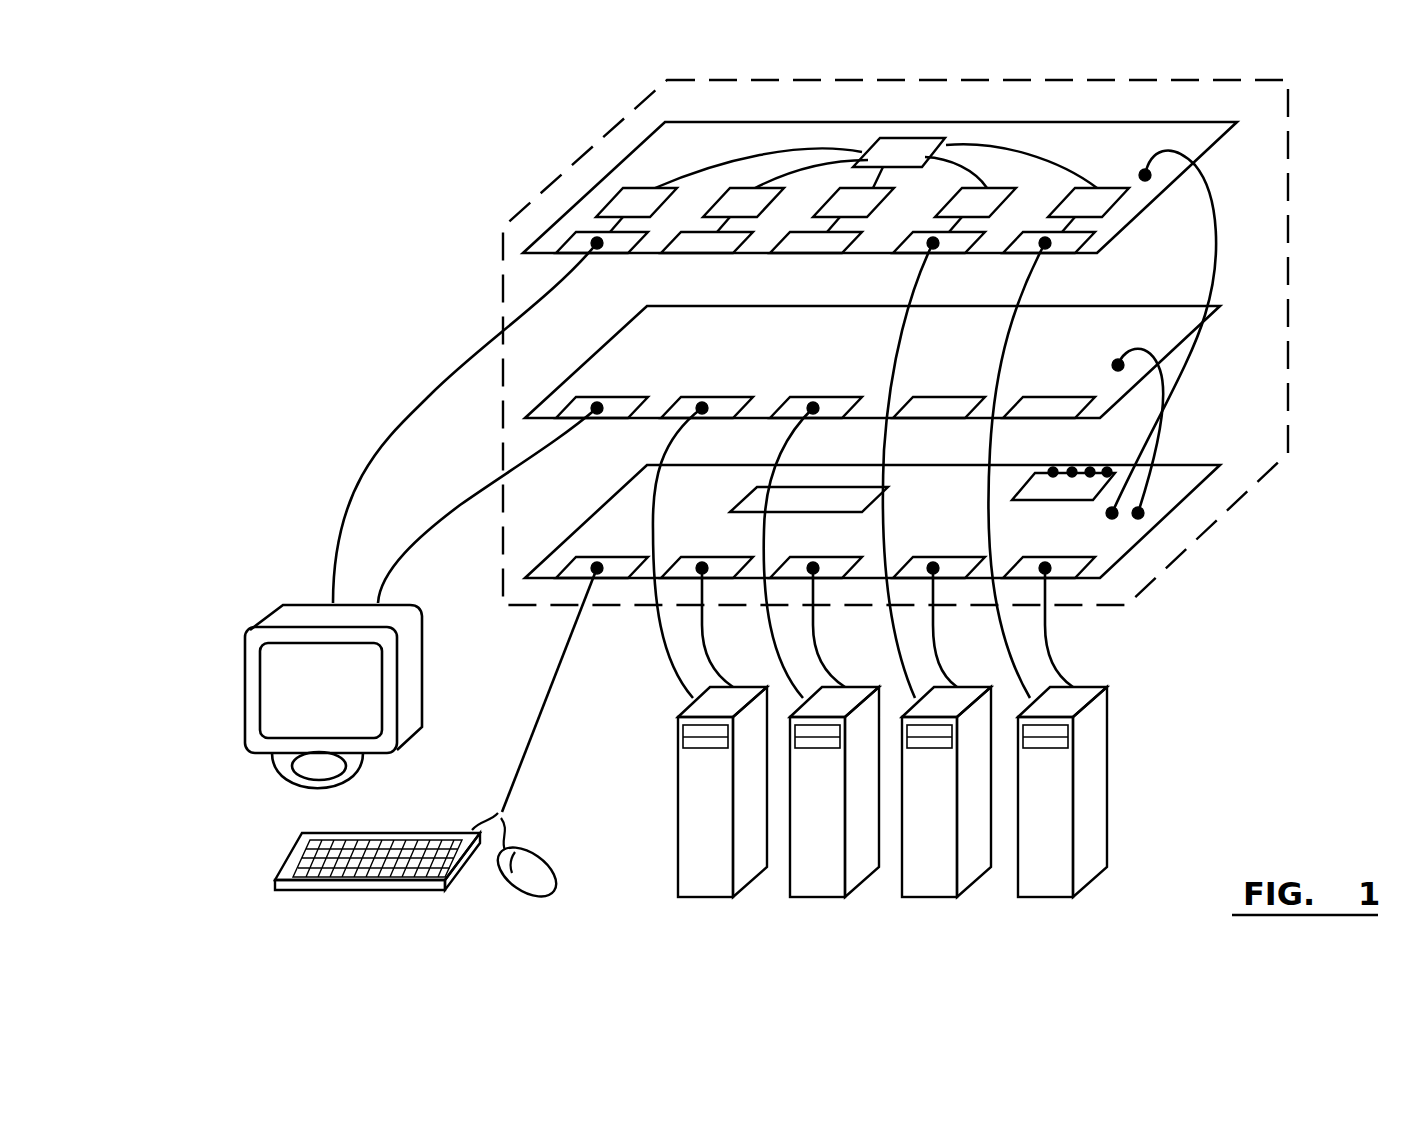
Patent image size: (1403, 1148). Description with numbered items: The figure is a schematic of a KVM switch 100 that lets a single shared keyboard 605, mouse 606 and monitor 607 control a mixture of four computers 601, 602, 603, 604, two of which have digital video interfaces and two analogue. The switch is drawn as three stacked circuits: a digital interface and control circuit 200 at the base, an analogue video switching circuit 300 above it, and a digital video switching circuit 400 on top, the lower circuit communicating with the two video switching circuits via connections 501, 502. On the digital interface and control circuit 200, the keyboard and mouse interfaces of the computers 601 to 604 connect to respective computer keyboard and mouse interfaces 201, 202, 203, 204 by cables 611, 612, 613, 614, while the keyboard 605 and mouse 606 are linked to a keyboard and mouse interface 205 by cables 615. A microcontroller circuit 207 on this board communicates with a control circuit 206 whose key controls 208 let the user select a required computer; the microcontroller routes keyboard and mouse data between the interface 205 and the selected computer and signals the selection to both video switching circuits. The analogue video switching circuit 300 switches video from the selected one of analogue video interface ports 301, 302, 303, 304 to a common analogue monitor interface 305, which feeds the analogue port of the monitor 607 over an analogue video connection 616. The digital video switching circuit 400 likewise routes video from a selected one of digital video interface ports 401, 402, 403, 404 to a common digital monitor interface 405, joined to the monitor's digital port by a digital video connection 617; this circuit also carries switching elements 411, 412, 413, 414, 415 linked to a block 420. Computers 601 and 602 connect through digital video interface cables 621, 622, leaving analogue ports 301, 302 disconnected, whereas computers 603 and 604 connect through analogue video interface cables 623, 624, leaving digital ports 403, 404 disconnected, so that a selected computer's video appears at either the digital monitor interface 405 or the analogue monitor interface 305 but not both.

The KVM switch 100 is at (1290, 343).
The digital interface and control circuit 200 is at (1200, 490).
The computer keyboard and mouse interface 201 is at (1066, 557).
The computer keyboard and mouse interface 202 is at (954, 557).
The computer keyboard and mouse interface 203 is at (832, 557).
The computer keyboard and mouse interface 204 is at (721, 557).
The keyboard and mouse interface 205 is at (617, 557).
The control circuit 206 is at (1063, 486).
The microcontroller circuit 207 is at (809, 499).
The key controls 208 is at (1106, 467).
The analogue video switching circuit 300 is at (1220, 312).
The analogue video interface port 301 is at (1066, 397).
The analogue video interface port 302 is at (954, 397).
The analogue video interface port 303 is at (832, 397).
The analogue video interface port 304 is at (721, 397).
The analogue monitor interface 305 is at (613, 397).
The digital video switching circuit 400 is at (1218, 143).
The digital video interface port 401 is at (1086, 243).
The digital video interface port 402 is at (976, 243).
The digital video interface port 403 is at (856, 243).
The digital video interface port 404 is at (746, 243).
The digital monitor interface 405 is at (638, 243).
The module 411 is at (1088, 210).
The module 412 is at (975, 210).
The module 413 is at (853, 210).
The module 414 is at (743, 210).
The module 415 is at (636, 210).
The controller 420 is at (876, 163).
The connection 501 is at (1220, 227).
The connection 502 is at (1160, 412).
The computer 601 is at (1093, 882).
The computer 602 is at (974, 880).
The computer 603 is at (862, 880).
The computer 604 is at (750, 880).
The keyboard 605 is at (288, 853).
The mouse 606 is at (535, 856).
The monitor 607 is at (275, 697).
The cable 611 is at (1057, 648).
The cable 612 is at (1015, 664).
The cable 613 is at (905, 665).
The cable 614 is at (782, 665).
The cables 615 is at (548, 698).
The analogue video connection 616 is at (437, 520).
The digital video connection 617 is at (400, 420).
The digital video interface cable 621 is at (940, 628).
The digital video interface cable 622 is at (818, 628).
The analogue video interface cable 623 is at (706, 628).
The analogue video interface cable 624 is at (664, 665).